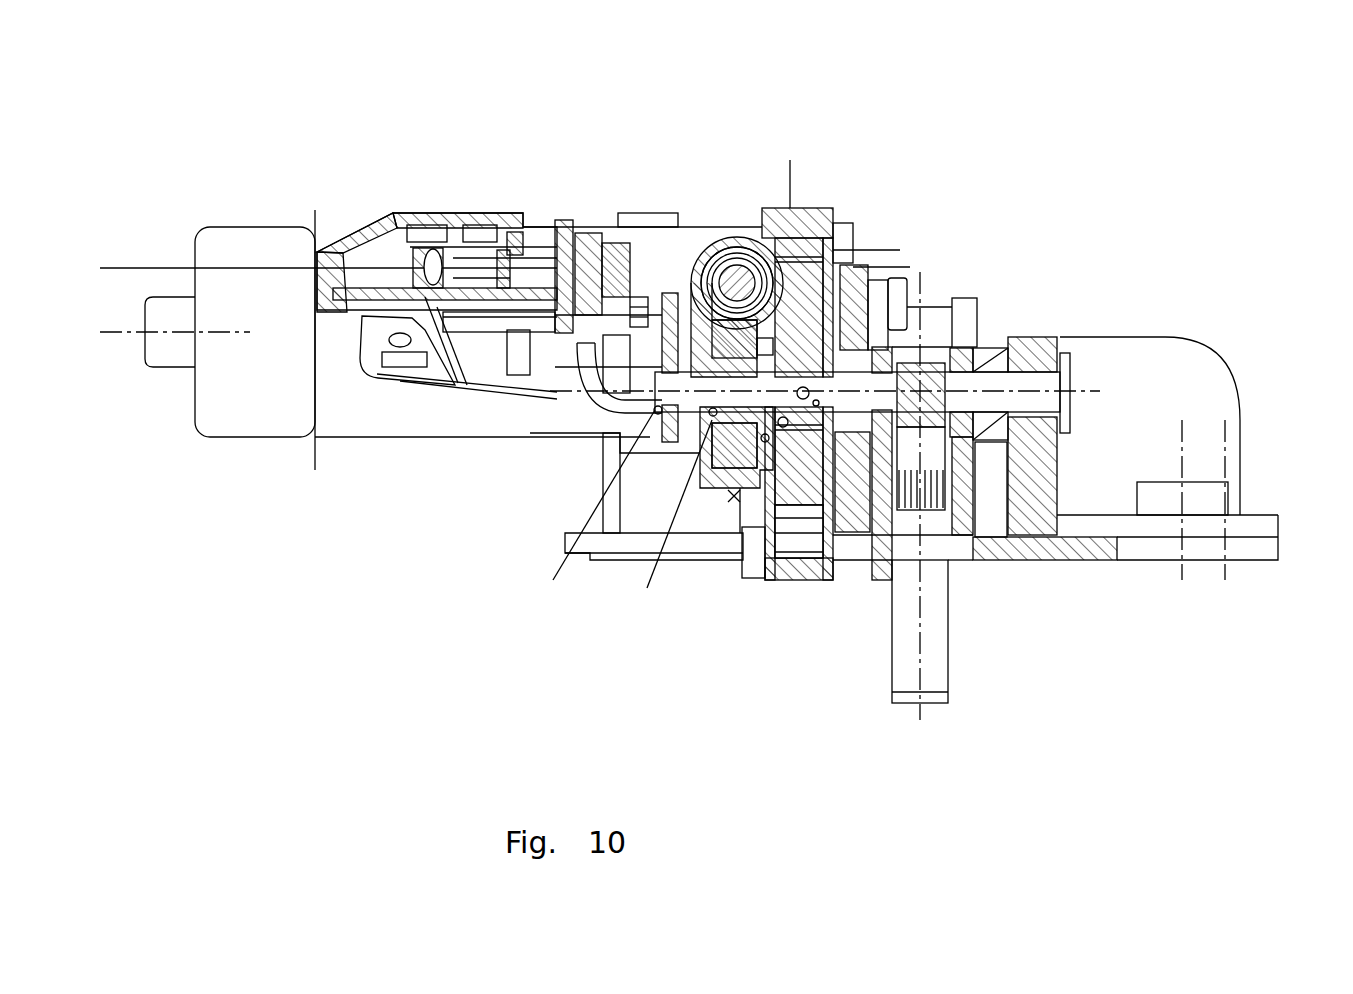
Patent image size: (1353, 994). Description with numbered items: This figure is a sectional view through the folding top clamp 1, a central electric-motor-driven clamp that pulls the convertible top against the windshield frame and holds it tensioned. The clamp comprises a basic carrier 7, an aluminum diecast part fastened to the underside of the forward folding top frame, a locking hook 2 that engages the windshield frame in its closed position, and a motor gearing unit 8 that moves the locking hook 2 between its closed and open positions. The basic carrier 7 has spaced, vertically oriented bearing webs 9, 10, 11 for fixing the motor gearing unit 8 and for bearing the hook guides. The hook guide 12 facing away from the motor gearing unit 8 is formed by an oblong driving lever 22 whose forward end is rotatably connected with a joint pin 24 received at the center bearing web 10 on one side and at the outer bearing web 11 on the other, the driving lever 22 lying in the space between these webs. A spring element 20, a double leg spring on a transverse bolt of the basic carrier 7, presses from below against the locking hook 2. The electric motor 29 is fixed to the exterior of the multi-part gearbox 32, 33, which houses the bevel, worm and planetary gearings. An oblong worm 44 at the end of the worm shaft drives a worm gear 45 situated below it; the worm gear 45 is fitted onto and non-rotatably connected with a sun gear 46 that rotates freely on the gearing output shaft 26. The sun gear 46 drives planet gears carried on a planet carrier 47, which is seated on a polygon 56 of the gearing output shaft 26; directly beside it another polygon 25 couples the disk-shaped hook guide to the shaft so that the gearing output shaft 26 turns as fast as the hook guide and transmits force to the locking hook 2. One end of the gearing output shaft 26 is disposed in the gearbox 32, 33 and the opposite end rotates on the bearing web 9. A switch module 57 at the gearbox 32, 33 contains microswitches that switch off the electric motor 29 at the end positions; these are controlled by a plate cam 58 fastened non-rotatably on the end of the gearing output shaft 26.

The folding top clamp 1 is at (858, 118).
The locking hook 2 is at (883, 686).
The basic carrier 7 is at (1253, 440).
The motor gearing unit 8 is at (183, 405).
The bearing web 9 is at (878, 290).
The center bearing web 10 is at (965, 300).
The outer bearing web 11 is at (1045, 462).
The hook guide 12 is at (989, 450).
The spring element 20 is at (940, 490).
The driving lever 22 is at (990, 345).
The joint pin 24 is at (1060, 380).
The polygon 25 is at (846, 342).
The gearing output shaft 26 is at (816, 405).
The electric motor 29 is at (282, 410).
The gearbox 32 is at (790, 210).
The gearbox 33 is at (705, 250).
The worm 44 is at (720, 237).
The worm gear 45 is at (733, 432).
The sun gear 46 is at (803, 398).
The planet carrier 47 is at (848, 338).
The polygon 56 is at (823, 435).
The switch module 57 is at (426, 195).
The plate cam 58 is at (663, 333).